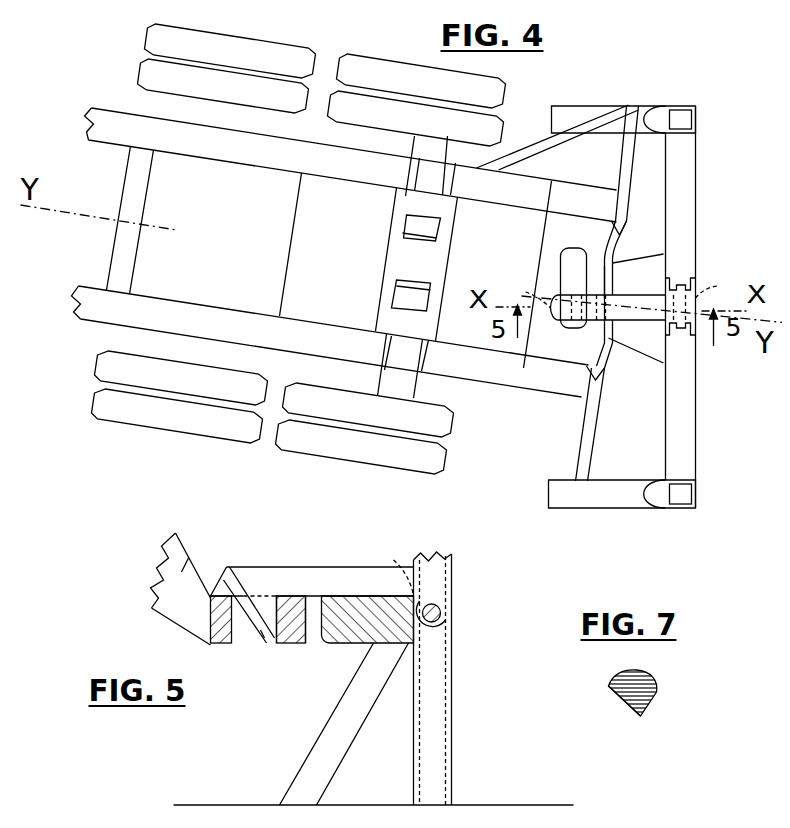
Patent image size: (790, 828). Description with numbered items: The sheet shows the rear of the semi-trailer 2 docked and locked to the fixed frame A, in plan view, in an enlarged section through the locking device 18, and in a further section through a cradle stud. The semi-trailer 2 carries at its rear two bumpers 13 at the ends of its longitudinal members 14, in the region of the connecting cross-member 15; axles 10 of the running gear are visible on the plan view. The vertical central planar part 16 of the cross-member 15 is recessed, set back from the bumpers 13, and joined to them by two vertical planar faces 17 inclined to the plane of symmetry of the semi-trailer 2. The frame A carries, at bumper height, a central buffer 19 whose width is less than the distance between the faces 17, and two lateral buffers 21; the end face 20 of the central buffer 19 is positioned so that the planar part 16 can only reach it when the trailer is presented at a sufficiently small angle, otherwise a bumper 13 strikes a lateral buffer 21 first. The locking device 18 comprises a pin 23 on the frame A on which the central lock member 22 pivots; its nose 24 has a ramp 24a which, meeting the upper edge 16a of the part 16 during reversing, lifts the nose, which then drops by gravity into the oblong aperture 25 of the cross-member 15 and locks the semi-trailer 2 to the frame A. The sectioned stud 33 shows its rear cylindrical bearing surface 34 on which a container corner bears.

In FIG. 5, the semi-trailer 2 is at (183, 574).
In FIG. 4, the axle 10 is at (433, 175).
In FIG. 4, the bumpers 13 is at (635, 122).
In FIG. 4, the longitudinal members 14 is at (562, 194).
In FIG. 5, the longitudinal members 14 is at (192, 615).
In FIG. 4, the connecting cross-member 15 is at (550, 236).
In FIG. 5, the connecting cross-member 15 is at (222, 648).
In FIG. 4, the vertical central planar part 16 is at (603, 345).
In FIG. 5, the vertical central planar part 16 is at (312, 632).
In FIG. 5, the upper edge 16a is at (308, 630).
In FIG. 4, the vertical planar faces 17 is at (614, 229).
In FIG. 4, the locking device 18 is at (688, 417).
In FIG. 5, the locking device 18 is at (440, 693).
In FIG. 4, the central buffer 19 is at (653, 265).
In FIG. 5, the central buffer 19 is at (375, 597).
In FIG. 4, the end face 20 is at (607, 282).
In FIG. 4, the lateral buffers 21 is at (655, 117).
In FIG. 4, the central lock member 22 is at (617, 308).
In FIG. 5, the central lock member 22 is at (320, 568).
In FIG. 4, the pin 23 is at (715, 283).
In FIG. 5, the pin 23 is at (447, 620).
In FIG. 4, the nose 24 is at (528, 288).
In FIG. 5, the nose 24 is at (268, 630).
In FIG. 5, the ramp 24a is at (262, 632).
In FIG. 4, the oblong aperture 25 is at (573, 262).
In FIG. 5, the oblong aperture 25 is at (243, 613).
In FIG. 7, the stud 33 is at (648, 717).
In FIG. 7, the cylindrical surface 34 is at (657, 675).
In FIG. 4, the frame A is at (701, 267).